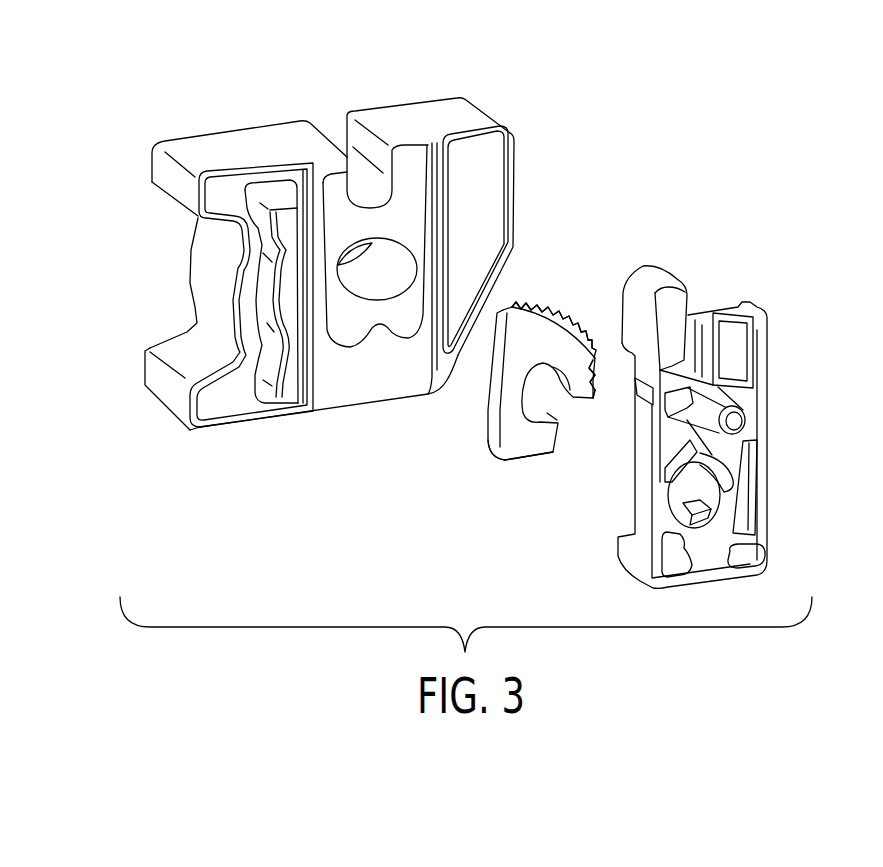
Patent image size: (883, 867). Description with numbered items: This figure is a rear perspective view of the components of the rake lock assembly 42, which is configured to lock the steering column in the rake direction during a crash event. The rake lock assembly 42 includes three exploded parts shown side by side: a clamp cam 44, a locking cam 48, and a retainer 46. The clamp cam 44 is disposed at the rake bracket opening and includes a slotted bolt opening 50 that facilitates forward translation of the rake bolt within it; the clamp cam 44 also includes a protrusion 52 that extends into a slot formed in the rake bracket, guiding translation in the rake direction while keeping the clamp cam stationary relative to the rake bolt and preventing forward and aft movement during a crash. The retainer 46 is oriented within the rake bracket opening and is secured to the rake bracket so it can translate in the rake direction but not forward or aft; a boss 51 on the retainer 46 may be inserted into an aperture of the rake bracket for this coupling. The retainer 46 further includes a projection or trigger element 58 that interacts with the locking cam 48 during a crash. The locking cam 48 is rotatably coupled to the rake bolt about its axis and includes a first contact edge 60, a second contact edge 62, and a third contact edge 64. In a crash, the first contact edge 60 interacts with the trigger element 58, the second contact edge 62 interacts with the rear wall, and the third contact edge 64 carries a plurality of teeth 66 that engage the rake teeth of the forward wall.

The rake lock assembly 42 is at (506, 319).
The clamp cam 44 is at (367, 261).
The retainer 46 is at (743, 427).
The locking cam 48 is at (537, 387).
The slotted bolt opening 50 is at (398, 264).
The boss 51 is at (730, 413).
The protrusion 52 is at (292, 385).
The trigger element 58 is at (702, 503).
The first contact edge 60 is at (552, 445).
The second contact edge 62 is at (535, 462).
The third contact edge 64 is at (555, 302).
The teeth 66 is at (596, 372).